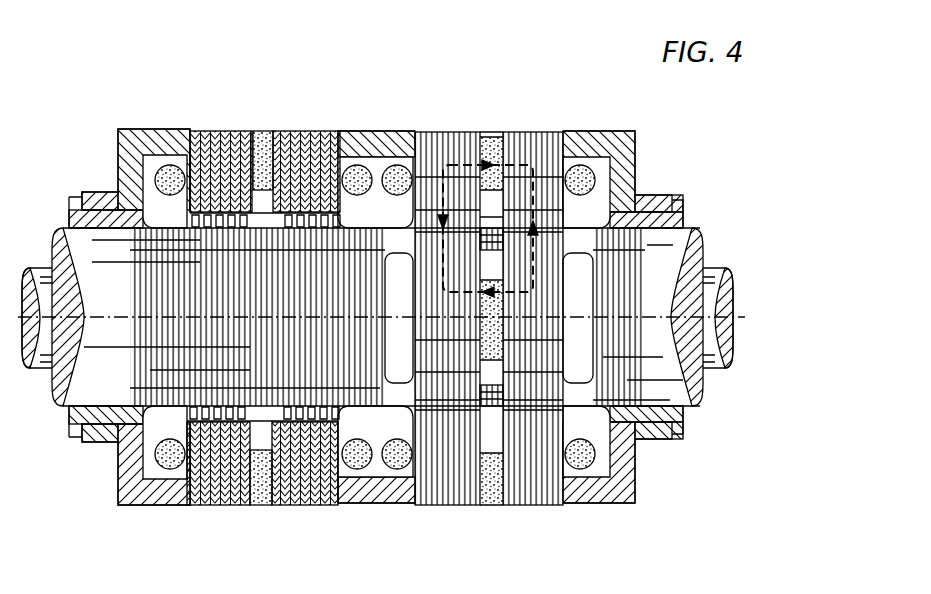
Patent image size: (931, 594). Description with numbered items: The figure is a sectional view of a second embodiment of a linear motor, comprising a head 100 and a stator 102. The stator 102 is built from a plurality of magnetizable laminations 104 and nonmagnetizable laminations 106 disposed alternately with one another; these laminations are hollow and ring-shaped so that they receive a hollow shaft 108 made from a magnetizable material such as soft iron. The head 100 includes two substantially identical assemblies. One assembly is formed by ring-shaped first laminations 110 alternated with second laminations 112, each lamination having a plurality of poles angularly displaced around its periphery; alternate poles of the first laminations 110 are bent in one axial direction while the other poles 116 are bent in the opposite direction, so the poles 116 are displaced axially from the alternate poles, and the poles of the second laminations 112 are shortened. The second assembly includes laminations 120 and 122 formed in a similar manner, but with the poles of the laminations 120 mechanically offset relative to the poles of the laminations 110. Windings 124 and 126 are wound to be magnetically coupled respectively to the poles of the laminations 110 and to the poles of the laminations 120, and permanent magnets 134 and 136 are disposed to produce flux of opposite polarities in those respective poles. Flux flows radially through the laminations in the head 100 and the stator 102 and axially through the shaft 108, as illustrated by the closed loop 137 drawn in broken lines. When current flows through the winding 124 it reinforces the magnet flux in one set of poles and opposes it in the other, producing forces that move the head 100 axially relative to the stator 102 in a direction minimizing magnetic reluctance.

The head 100 is at (465, 98).
The stator 102 is at (704, 411).
The magnetizable laminations 104 is at (260, 507).
The nonmagnetizable laminations 106 is at (233, 507).
The hollow shaft 108 is at (718, 273).
The first laminations 110 is at (220, 131).
The second laminations 112 is at (300, 131).
The poles 116 is at (323, 131).
The laminations 120 is at (443, 136).
The laminations 122 is at (527, 136).
The winding 124 is at (172, 470).
The winding 126 is at (578, 466).
The permanent magnet 134 is at (260, 131).
The permanent magnet 136 is at (490, 136).
The closed loop 137 is at (538, 168).